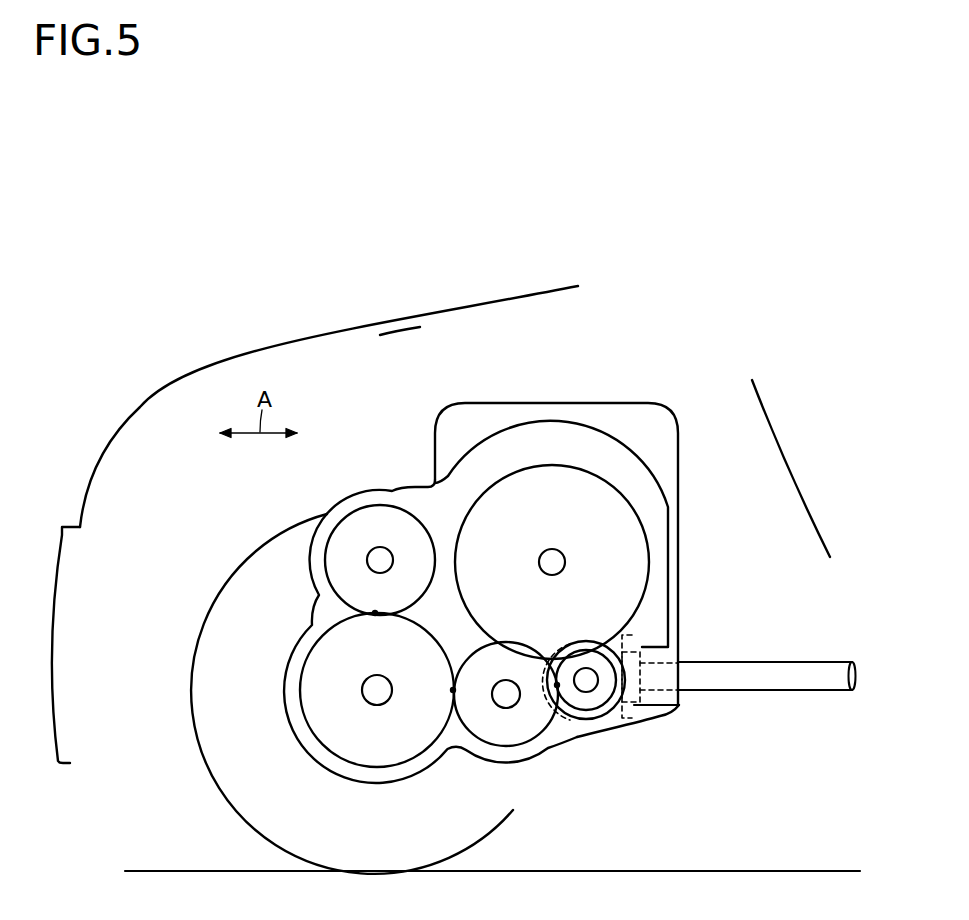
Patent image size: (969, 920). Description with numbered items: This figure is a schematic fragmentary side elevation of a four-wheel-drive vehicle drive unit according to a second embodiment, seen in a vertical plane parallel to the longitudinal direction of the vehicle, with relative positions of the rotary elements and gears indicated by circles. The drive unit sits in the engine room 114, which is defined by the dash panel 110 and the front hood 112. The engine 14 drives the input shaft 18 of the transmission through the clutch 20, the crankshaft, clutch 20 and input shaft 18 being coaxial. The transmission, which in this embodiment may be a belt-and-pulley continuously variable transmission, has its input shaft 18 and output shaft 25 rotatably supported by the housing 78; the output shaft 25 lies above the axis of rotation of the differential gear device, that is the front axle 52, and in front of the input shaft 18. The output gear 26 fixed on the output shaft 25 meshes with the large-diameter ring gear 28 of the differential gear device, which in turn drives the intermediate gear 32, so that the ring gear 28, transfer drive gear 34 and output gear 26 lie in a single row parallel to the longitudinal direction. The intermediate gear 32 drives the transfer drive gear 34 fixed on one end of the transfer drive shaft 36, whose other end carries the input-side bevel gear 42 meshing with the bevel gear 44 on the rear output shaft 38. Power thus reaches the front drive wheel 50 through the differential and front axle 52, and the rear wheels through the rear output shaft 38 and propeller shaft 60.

The engine 14 is at (516, 406).
The input shaft 18 is at (556, 560).
The clutch 20 is at (623, 497).
The output shaft 25 is at (371, 553).
The output gear 26 is at (377, 505).
The ring gear 28 is at (298, 683).
The intermediate gear 32 is at (522, 746).
The transfer drive gear 34 is at (573, 707).
The transfer drive shaft 36 is at (590, 686).
The rear output shaft 38 is at (767, 655).
The propeller shaft 60 is at (777, 670).
The input-side bevel gear 42 is at (624, 681).
The bevel gear 44 is at (623, 640).
The front drive wheel 50 is at (232, 592).
The front axle 52 is at (370, 695).
The housing 78 is at (630, 725).
The dash panel 110 is at (790, 468).
The front hood 112 is at (302, 341).
The engine room 114 is at (403, 352).